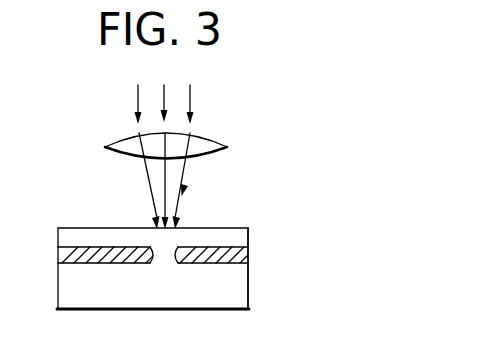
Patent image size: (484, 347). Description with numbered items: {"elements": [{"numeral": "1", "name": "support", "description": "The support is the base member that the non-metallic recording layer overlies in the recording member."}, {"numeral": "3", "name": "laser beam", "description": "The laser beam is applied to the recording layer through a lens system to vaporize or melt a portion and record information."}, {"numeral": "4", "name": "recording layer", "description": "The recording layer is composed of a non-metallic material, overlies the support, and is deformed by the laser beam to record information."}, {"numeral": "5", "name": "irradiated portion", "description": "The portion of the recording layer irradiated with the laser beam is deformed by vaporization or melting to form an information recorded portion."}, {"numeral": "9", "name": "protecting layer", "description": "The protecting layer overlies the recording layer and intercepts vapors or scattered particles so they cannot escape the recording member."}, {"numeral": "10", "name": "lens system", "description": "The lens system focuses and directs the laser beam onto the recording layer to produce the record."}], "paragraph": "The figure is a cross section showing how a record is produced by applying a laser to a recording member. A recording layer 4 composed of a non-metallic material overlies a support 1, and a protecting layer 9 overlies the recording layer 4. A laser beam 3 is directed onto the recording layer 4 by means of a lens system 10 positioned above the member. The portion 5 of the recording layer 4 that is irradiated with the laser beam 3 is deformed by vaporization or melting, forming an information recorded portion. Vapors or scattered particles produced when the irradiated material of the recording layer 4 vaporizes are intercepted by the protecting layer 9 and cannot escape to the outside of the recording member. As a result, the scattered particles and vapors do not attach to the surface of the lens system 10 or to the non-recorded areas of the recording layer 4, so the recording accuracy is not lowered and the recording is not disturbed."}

The substrate 1 is at (240, 291).
The converged light beam 3 is at (186, 181).
The light absorbing layer 4 is at (240, 258).
The aperture 5 is at (155, 248).
The transparent top layer 9 is at (238, 235).
The condensing lens 10 is at (201, 148).